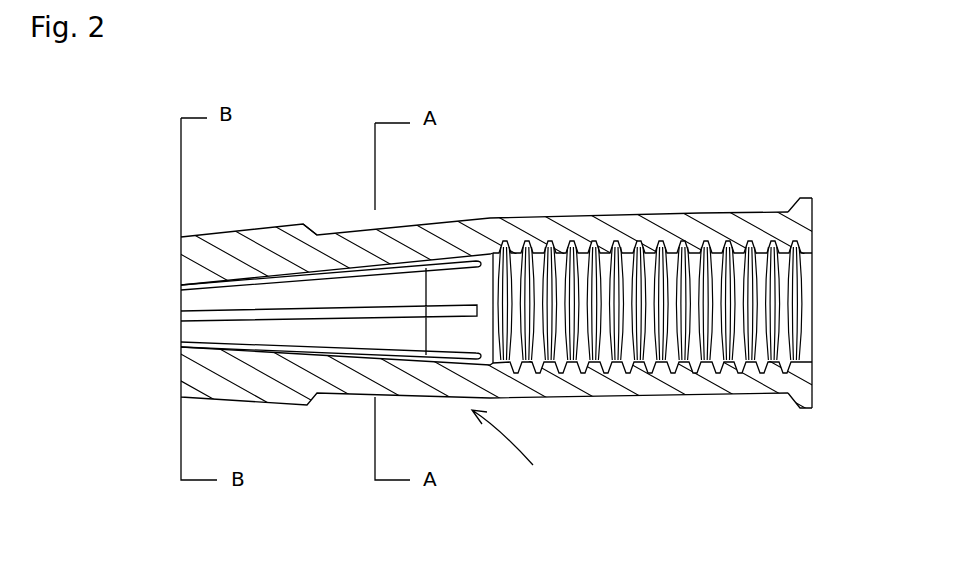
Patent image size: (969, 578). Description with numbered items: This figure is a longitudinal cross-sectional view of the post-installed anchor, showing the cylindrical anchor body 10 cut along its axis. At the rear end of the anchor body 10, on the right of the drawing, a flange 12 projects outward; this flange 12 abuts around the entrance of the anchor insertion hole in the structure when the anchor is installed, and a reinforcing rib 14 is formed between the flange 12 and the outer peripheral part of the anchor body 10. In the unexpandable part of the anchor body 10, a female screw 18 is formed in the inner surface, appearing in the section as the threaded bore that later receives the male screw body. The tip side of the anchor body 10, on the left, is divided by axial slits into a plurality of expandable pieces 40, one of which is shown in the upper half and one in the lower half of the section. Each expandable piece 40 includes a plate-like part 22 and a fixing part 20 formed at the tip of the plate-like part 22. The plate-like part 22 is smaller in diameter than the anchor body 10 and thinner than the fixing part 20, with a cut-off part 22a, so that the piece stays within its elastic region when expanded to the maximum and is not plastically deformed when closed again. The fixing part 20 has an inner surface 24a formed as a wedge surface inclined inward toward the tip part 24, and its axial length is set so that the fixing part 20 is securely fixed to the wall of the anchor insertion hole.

The anchor body 10 is at (626, 204).
The flange 12 is at (814, 199).
The reinforcing rib 14 is at (796, 395).
The female screw 18 is at (643, 373).
The fixing part 20 is at (228, 245).
The plate-like part 22 is at (441, 237).
The cut-off part 22a is at (343, 243).
The tip part 24 is at (181, 368).
The fixing part inner surface 24a is at (337, 352).
The expandable piece 40 is at (519, 446).